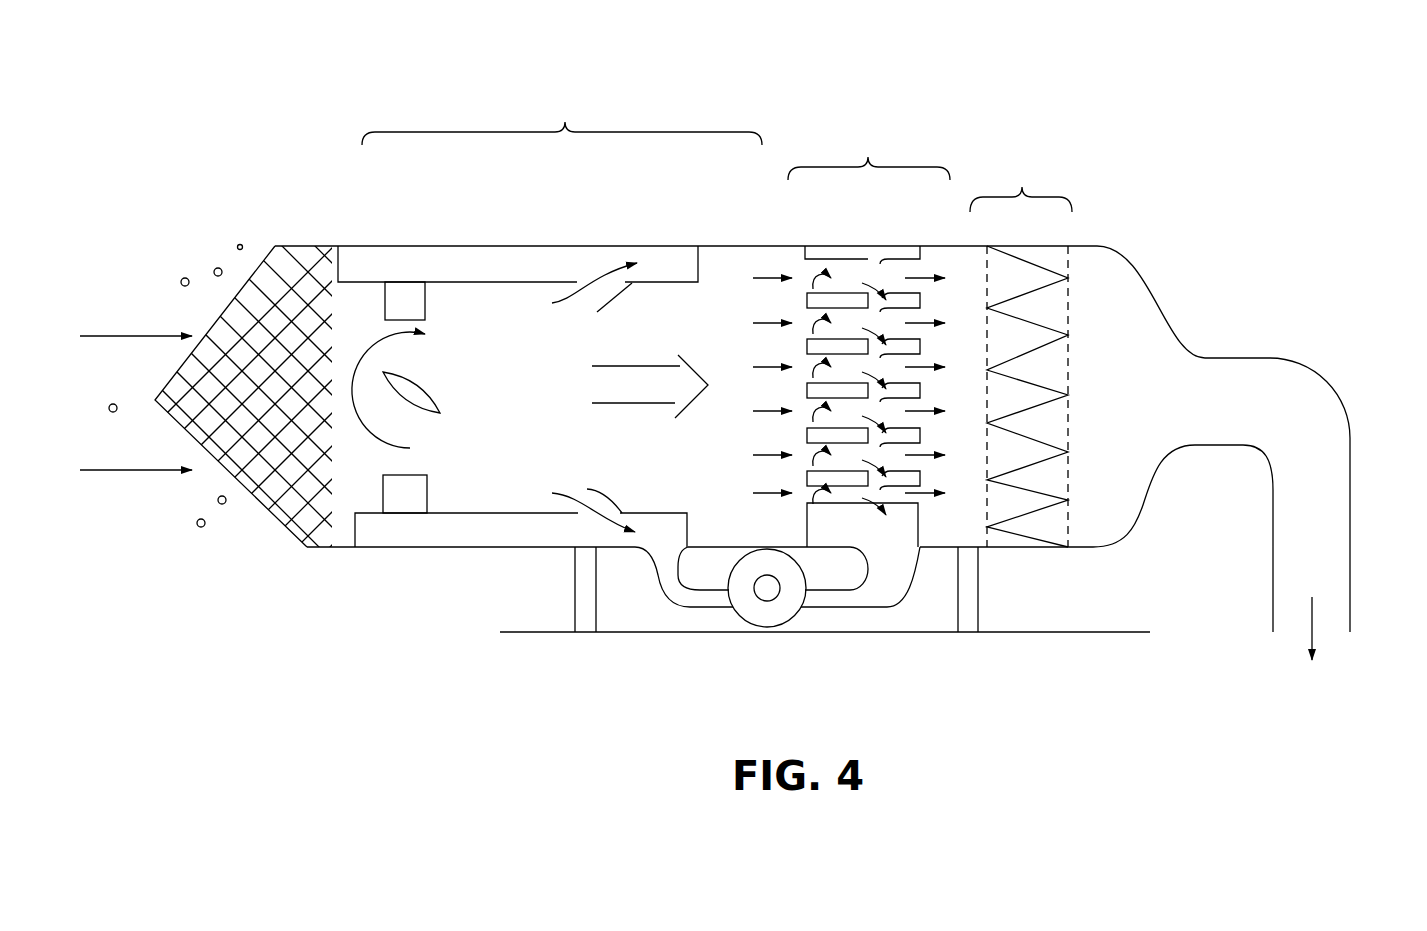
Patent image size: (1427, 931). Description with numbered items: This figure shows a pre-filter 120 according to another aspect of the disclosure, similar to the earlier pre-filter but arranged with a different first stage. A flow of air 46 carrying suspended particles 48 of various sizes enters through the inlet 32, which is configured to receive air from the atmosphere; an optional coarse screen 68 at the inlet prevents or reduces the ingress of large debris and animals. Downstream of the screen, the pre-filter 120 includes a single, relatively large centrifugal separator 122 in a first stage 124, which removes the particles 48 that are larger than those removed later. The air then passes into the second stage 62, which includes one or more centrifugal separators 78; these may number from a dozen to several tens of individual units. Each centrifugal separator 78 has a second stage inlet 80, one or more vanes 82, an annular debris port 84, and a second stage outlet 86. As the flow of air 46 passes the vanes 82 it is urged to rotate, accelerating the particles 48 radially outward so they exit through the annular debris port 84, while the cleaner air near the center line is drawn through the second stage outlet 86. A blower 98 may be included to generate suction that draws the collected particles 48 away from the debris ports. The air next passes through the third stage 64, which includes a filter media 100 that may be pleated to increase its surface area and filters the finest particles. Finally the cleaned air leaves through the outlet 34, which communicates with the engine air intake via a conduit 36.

The inlet 32 is at (219, 245).
The outlet 34 is at (1203, 345).
The conduit 36 is at (1350, 563).
The flow of air 46 is at (120, 480).
The particles 48 is at (201, 530).
The second stage 62 is at (851, 323).
The third stage 64 is at (1021, 354).
The coarse screen 68 is at (283, 275).
The centrifugal separators 78 is at (490, 250).
The second stage inlet 80 is at (796, 506).
The vanes 82 is at (427, 490).
The annular debris port 84 is at (585, 518).
The second stage outlet 86 is at (930, 476).
The blower 98 is at (780, 612).
The filter media 100 is at (1034, 353).
The pre-filter 120 is at (793, 82).
The centrifugal separator 122 is at (520, 302).
The first stage 124 is at (562, 118).